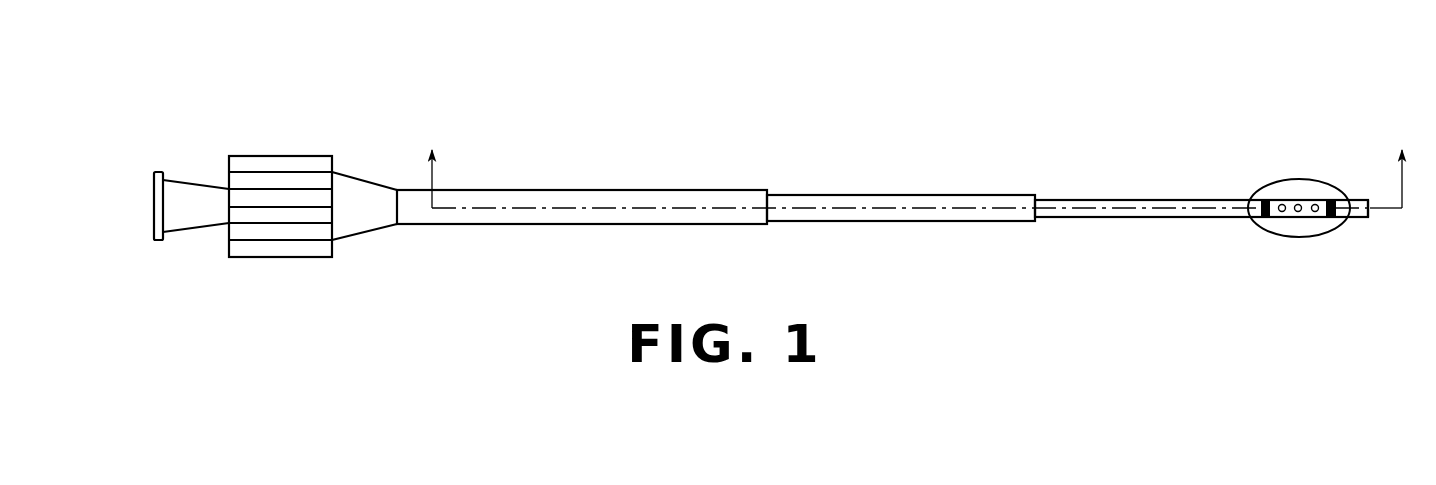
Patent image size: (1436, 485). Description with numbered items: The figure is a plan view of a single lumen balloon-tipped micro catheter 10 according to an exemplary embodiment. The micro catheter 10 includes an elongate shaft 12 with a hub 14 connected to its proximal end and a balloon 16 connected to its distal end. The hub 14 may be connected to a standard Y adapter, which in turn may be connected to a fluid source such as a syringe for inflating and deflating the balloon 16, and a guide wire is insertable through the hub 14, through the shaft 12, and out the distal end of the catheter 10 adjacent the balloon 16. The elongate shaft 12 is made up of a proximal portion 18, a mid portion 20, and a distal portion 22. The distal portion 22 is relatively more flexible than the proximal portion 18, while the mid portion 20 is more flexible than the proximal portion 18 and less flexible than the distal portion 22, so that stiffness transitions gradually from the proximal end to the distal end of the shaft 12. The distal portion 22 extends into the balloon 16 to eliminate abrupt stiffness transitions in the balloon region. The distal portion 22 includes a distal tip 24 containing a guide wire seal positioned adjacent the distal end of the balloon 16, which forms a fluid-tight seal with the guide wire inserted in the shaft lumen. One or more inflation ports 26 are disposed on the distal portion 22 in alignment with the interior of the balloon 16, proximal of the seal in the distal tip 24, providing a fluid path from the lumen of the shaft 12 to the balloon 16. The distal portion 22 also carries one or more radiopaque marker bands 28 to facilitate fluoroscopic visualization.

The single lumen balloon-tipped micro catheter 10 is at (605, 43).
The elongate shaft 12 is at (928, 130).
The hub 14 is at (278, 268).
The balloon 16 is at (1306, 168).
The proximal portion 18 is at (467, 237).
The mid portion 20 is at (902, 232).
The distal portion 22 is at (1154, 230).
The distal tip 24 is at (1358, 230).
The inflation ports 26 is at (1315, 204).
The radiopaque marker bands 28 is at (1331, 219).